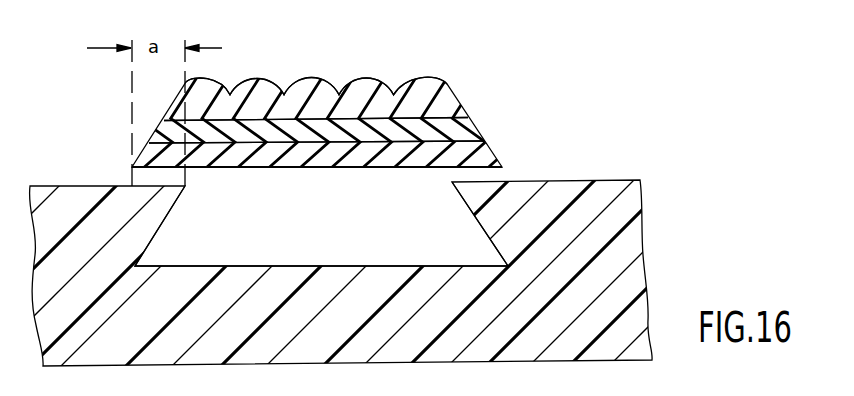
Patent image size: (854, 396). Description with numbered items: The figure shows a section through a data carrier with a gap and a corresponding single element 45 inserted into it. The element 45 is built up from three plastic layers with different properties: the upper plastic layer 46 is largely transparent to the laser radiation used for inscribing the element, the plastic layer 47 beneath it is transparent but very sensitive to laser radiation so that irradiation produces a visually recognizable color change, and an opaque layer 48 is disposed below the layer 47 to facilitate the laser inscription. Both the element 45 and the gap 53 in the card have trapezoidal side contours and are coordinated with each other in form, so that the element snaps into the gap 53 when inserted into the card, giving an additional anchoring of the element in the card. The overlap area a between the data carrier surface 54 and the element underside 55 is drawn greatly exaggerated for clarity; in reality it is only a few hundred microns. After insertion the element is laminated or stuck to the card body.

The single element 45 is at (336, 85).
The plastic layer 46 is at (450, 83).
The plastic layer 47 is at (477, 122).
The opaque layer 48 is at (488, 150).
The gap 53 is at (150, 258).
The data carrier surface 54 is at (77, 186).
The element underside 55 is at (290, 168).